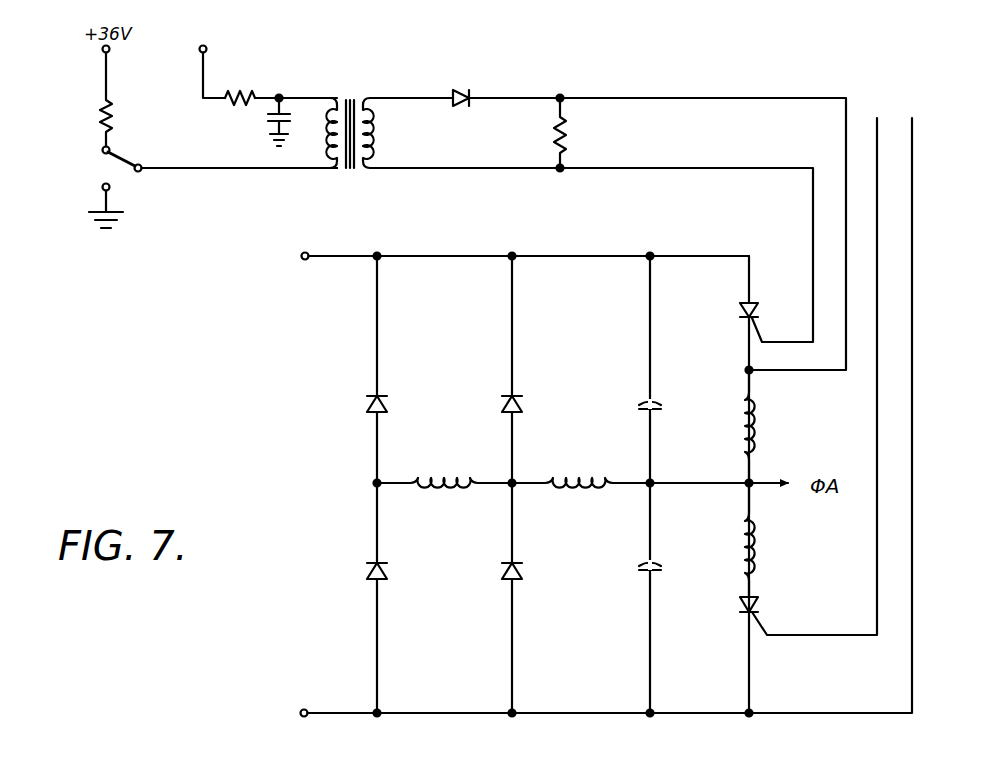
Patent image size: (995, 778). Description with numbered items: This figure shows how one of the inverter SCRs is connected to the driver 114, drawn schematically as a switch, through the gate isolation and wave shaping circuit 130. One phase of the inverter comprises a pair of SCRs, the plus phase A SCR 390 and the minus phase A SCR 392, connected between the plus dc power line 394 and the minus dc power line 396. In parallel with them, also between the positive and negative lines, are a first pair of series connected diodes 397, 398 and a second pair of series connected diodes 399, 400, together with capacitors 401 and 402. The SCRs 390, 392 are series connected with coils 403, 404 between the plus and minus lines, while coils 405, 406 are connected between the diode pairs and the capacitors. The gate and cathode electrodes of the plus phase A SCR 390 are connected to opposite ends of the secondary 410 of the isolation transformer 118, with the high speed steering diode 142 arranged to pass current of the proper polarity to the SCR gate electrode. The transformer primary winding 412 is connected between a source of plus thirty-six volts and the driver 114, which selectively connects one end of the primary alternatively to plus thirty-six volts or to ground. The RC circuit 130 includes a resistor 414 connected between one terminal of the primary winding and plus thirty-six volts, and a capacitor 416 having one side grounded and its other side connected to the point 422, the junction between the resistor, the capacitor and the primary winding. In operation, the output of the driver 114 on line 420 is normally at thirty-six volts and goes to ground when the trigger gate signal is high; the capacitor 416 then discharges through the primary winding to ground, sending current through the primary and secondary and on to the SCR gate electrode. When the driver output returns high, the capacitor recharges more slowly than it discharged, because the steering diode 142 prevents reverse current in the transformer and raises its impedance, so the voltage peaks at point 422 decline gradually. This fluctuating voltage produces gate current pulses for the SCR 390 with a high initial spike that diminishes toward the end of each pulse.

The driver 114 is at (97, 170).
The isolation transformer 118 is at (357, 110).
The gate isolation and wave shaping circuit 130 is at (256, 76).
The high speed steering diode 142 is at (462, 92).
The plus phase A SCR 390 is at (738, 308).
The minus phase A SCR 392 is at (738, 602).
The plus dc power line 394 is at (337, 254).
The minus dc power line 396 is at (347, 712).
The diode 397 is at (365, 404).
The diode 398 is at (365, 572).
The diode 399 is at (500, 404).
The diode 400 is at (500, 572).
The capacitor 401 is at (638, 402).
The capacitor 402 is at (638, 568).
The coil 403 is at (743, 431).
The coil 404 is at (743, 543).
The coil 405 is at (452, 452).
The coil 406 is at (586, 452).
The secondary 410 is at (376, 147).
The transformer primary winding 412 is at (328, 148).
The resistor 414 is at (228, 105).
The capacitor 416 is at (267, 122).
The line 420 is at (188, 172).
The point 422 is at (290, 84).